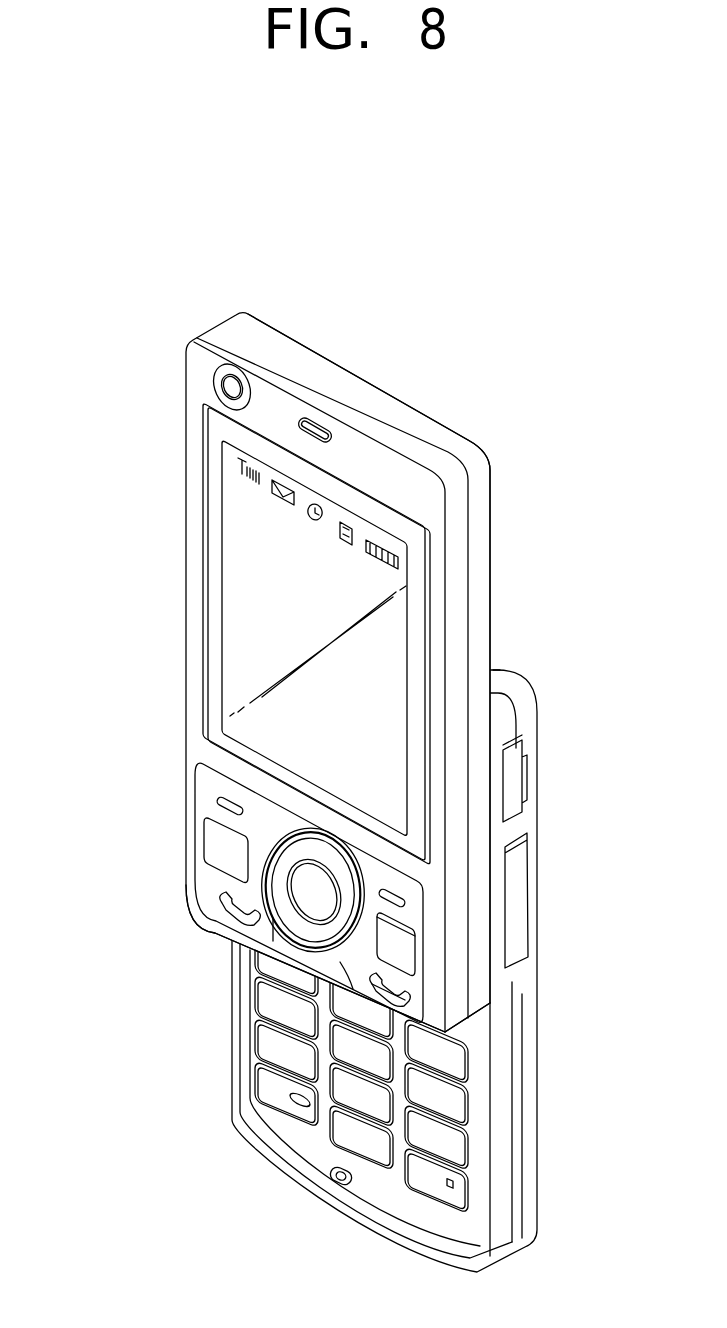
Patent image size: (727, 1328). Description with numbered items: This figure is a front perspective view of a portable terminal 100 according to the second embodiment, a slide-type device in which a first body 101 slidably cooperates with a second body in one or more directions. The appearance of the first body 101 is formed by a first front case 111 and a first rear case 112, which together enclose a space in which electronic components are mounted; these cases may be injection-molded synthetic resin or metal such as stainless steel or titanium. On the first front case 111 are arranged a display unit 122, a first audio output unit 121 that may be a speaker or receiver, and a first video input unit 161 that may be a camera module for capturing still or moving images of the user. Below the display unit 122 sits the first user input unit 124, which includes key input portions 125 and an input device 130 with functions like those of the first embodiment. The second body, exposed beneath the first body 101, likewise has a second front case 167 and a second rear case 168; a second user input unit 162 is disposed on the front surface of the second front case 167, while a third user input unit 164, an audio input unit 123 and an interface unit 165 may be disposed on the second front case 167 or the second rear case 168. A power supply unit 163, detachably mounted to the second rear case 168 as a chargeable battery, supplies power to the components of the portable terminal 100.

The portable terminal 100 is at (472, 399).
The first body 101 is at (152, 472).
The first front case 111 is at (482, 523).
The first rear case 112 is at (460, 566).
The first audio output unit 121 is at (318, 426).
The display unit 122 is at (238, 578).
The audio input unit 123 is at (340, 1184).
The first user input unit 124 is at (186, 830).
The key input portions 125 is at (408, 918).
The input device 130 is at (318, 888).
The first video input unit 161 is at (236, 388).
The second user input unit 162 is at (254, 1060).
The power supply unit 163 is at (528, 1093).
The third user input unit 164 is at (520, 935).
The interface unit 165 is at (518, 775).
The second front case 167 is at (500, 712).
The second rear case 168 is at (530, 738).